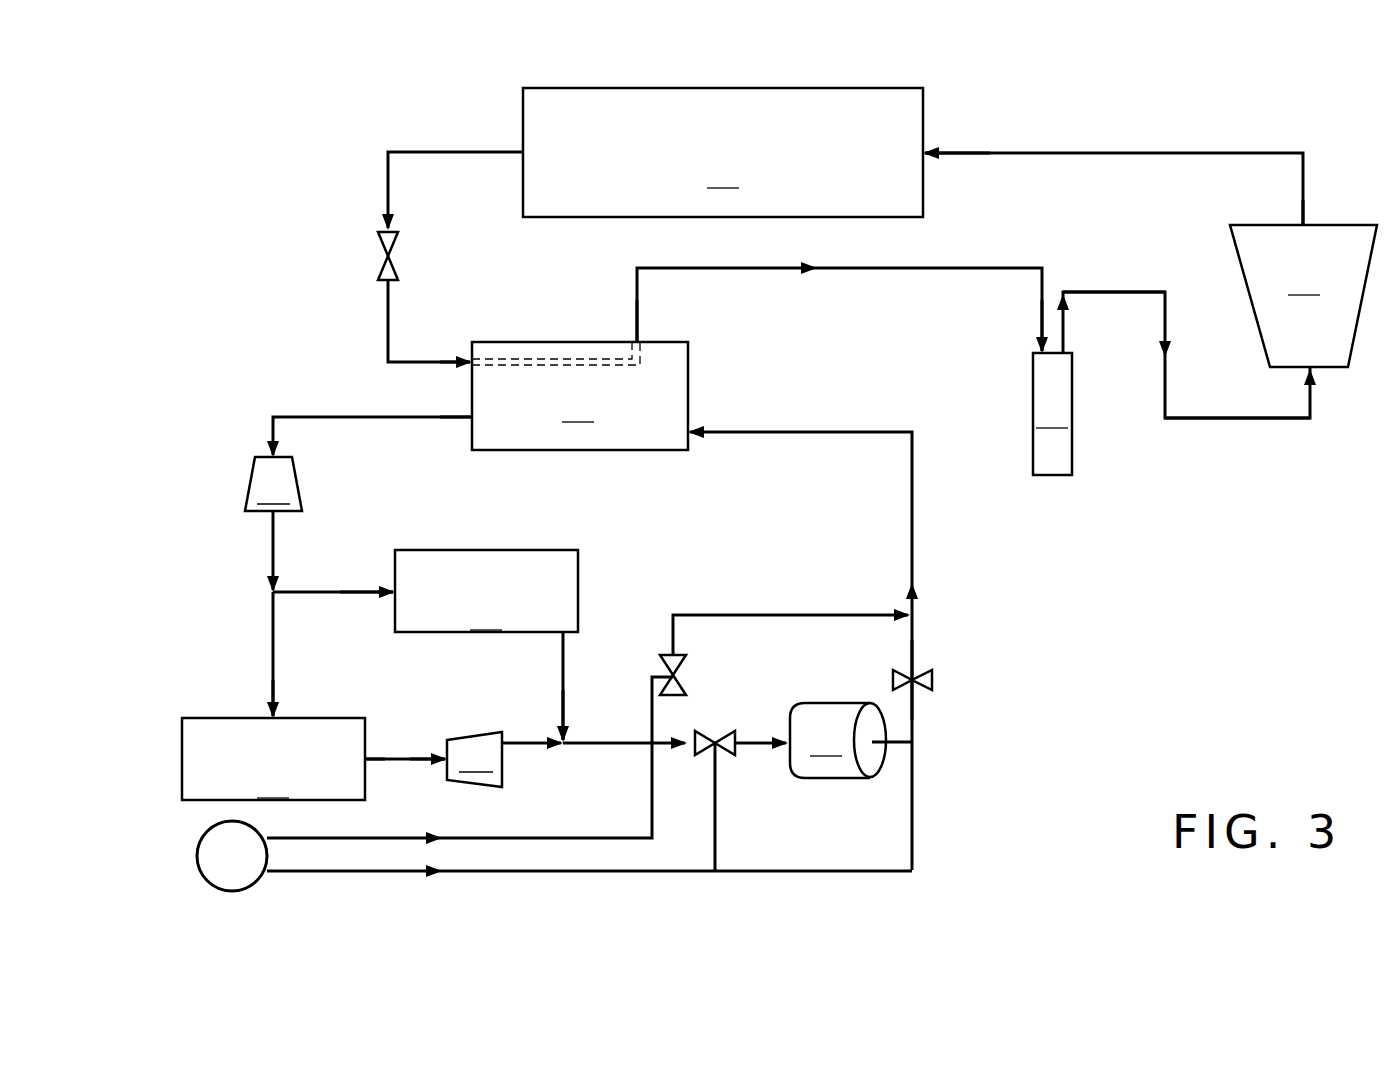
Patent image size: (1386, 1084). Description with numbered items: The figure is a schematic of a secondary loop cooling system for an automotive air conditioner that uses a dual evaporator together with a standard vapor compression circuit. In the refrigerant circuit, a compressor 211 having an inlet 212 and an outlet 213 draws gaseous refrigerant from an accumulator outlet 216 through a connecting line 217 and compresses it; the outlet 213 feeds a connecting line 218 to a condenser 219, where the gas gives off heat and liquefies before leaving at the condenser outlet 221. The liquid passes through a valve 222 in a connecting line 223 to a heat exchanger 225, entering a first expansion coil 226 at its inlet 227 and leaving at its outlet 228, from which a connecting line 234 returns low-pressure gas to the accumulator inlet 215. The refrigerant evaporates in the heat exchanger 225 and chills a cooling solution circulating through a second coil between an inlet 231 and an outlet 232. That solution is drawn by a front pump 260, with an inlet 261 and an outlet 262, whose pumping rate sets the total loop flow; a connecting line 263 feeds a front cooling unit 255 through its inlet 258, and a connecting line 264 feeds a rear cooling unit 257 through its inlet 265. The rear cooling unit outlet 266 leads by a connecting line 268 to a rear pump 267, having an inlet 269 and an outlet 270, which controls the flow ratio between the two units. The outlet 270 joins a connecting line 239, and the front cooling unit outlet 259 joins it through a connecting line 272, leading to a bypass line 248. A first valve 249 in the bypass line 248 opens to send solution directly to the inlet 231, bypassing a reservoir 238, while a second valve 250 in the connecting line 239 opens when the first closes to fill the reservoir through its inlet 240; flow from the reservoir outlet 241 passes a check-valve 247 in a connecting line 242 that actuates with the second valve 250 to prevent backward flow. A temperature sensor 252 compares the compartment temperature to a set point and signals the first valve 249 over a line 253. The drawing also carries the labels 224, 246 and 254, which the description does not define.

The compressor 211 is at (1303, 296).
The compressor inlet 212 is at (1314, 378).
The compressor outlet 213 is at (1305, 222).
The accumulator inlet 215 is at (1036, 352).
The accumulator outlet 216 is at (1067, 352).
The connecting line 217 is at (1217, 418).
The connecting line 218 is at (1152, 153).
The condenser 219 is at (723, 152).
The condenser outlet 221 is at (929, 158).
The valve 222 is at (522, 162).
The connecting line 223 is at (395, 248).
The expansion line 224 is at (385, 330).
The heat exchanger 225 is at (580, 396).
The first expansion coil 226 is at (549, 356).
The first expansion coil inlet 227 is at (468, 368).
The first expansion coil outlet 228 is at (639, 340).
The second expansion coil inlet 231 is at (692, 438).
The second expansion coil outlet 232 is at (470, 430).
The connecting line 234 is at (840, 270).
The reservoir 238 is at (835, 728).
The connecting line 239 is at (589, 746).
The reservoir inlet 240 is at (783, 752).
The reservoir outlet 241 is at (878, 746).
The connecting line 242 is at (915, 646).
The accumulator 246 is at (1051, 428).
The check-valve 247 is at (934, 690).
The bypass line 248 is at (785, 612).
The first valve 249 is at (665, 660).
The second valve 250 is at (726, 731).
The temperature sensor 252 is at (215, 886).
The line 253 is at (528, 834).
The sensor control line 254 is at (528, 876).
The front cooling unit 255 is at (486, 591).
The rear cooling unit 257 is at (273, 759).
The front cooling unit inlet 258 is at (393, 602).
The front cooling unit outlet 259 is at (562, 640).
The front pump 260 is at (238, 484).
The front pump inlet 261 is at (266, 448).
The front pump outlet 262 is at (275, 516).
The connecting line 263 is at (300, 592).
The connecting line 264 is at (270, 628).
The rear cooling unit inlet 265 is at (278, 712).
The rear cooling unit outlet 266 is at (368, 752).
The rear pump 267 is at (479, 731).
The connecting line 268 is at (418, 762).
The rear pump inlet 269 is at (444, 754).
The rear pump outlet 270 is at (503, 748).
The connecting line 272 is at (565, 705).